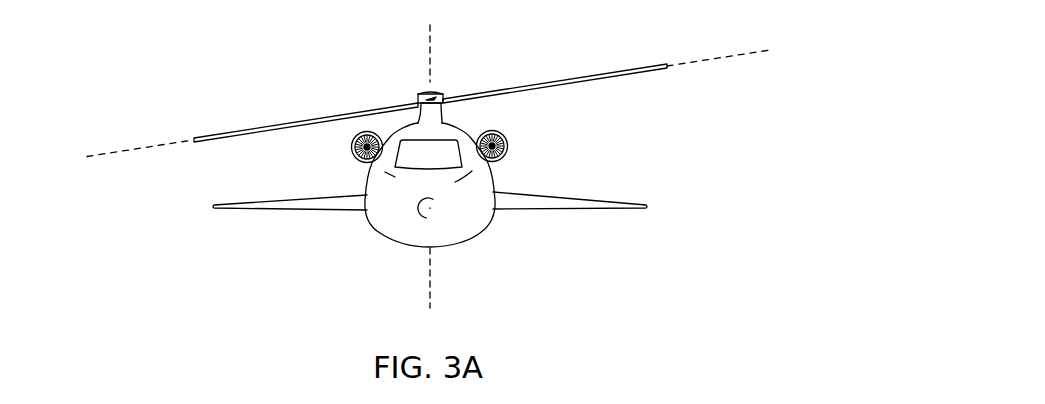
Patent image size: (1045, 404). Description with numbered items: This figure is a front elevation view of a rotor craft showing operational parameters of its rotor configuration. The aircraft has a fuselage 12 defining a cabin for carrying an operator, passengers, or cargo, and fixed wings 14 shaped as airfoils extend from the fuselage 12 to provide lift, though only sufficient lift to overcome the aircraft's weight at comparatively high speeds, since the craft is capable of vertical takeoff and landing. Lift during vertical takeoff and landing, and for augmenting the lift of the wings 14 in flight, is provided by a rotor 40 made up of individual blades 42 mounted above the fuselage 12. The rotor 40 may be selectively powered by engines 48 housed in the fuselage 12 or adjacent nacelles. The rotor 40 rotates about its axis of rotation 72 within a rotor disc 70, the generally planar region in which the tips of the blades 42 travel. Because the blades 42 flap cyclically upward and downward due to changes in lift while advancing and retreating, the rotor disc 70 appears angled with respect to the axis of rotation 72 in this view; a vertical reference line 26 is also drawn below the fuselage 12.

The fuselage 12 is at (393, 227).
The fixed wings 14 is at (300, 210).
The vertical axis (lower) 26 is at (433, 290).
The rotor 40 is at (430, 83).
The blades 42 is at (255, 128).
The engines 48 is at (352, 150).
The rotor disc 70 is at (712, 57).
The axis of rotation 72 is at (433, 43).